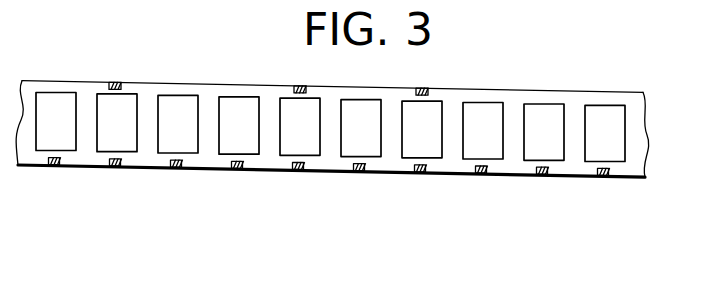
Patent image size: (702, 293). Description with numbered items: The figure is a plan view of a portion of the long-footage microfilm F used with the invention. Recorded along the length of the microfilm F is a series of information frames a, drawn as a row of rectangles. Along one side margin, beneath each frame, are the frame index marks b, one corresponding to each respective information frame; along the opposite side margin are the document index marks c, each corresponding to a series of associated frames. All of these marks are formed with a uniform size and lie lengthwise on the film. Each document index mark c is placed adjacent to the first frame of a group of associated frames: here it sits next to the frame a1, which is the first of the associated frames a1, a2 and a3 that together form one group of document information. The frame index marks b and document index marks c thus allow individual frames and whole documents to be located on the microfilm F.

The microfilm F is at (53, 83).
The information frames a is at (330, 119).
The first frame a1 is at (127, 138).
The second frame a2 is at (187, 143).
The third frame a3 is at (245, 150).
The frame index marks b is at (52, 170).
The document index marks c is at (117, 81).